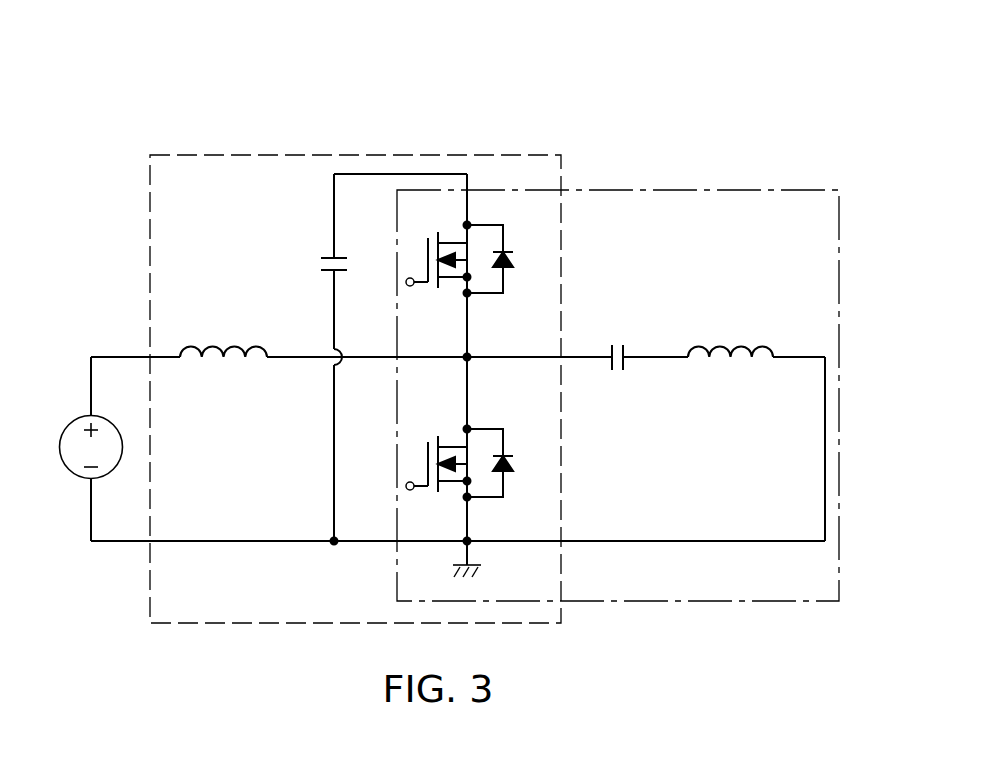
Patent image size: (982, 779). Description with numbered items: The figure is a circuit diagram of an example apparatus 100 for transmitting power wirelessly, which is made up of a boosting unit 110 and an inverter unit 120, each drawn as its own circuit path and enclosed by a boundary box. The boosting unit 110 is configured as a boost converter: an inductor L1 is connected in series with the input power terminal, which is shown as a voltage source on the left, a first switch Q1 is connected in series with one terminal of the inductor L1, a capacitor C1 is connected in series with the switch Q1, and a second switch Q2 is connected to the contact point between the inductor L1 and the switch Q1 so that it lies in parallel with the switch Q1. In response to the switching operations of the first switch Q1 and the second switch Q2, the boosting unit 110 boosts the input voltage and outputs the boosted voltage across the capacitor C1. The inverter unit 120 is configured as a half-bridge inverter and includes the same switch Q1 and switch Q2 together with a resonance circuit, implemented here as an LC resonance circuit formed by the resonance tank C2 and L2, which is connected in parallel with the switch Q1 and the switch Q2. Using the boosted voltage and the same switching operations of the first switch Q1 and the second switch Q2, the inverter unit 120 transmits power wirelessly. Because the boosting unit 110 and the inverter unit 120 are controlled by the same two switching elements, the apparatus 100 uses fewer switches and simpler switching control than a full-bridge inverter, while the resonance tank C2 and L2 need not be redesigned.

The apparatus for transmitting power wirelessly 100 is at (410, 39).
The boosting unit 110 is at (330, 155).
The inverter unit 120 is at (688, 190).
The inductor L1 is at (223, 337).
The capacitor C1 is at (318, 357).
The first switch Q1 is at (471, 247).
The second switch Q2 is at (471, 451).
The resonance tank capacitor C2 is at (618, 344).
The resonance tank inductor L2 is at (730, 338).